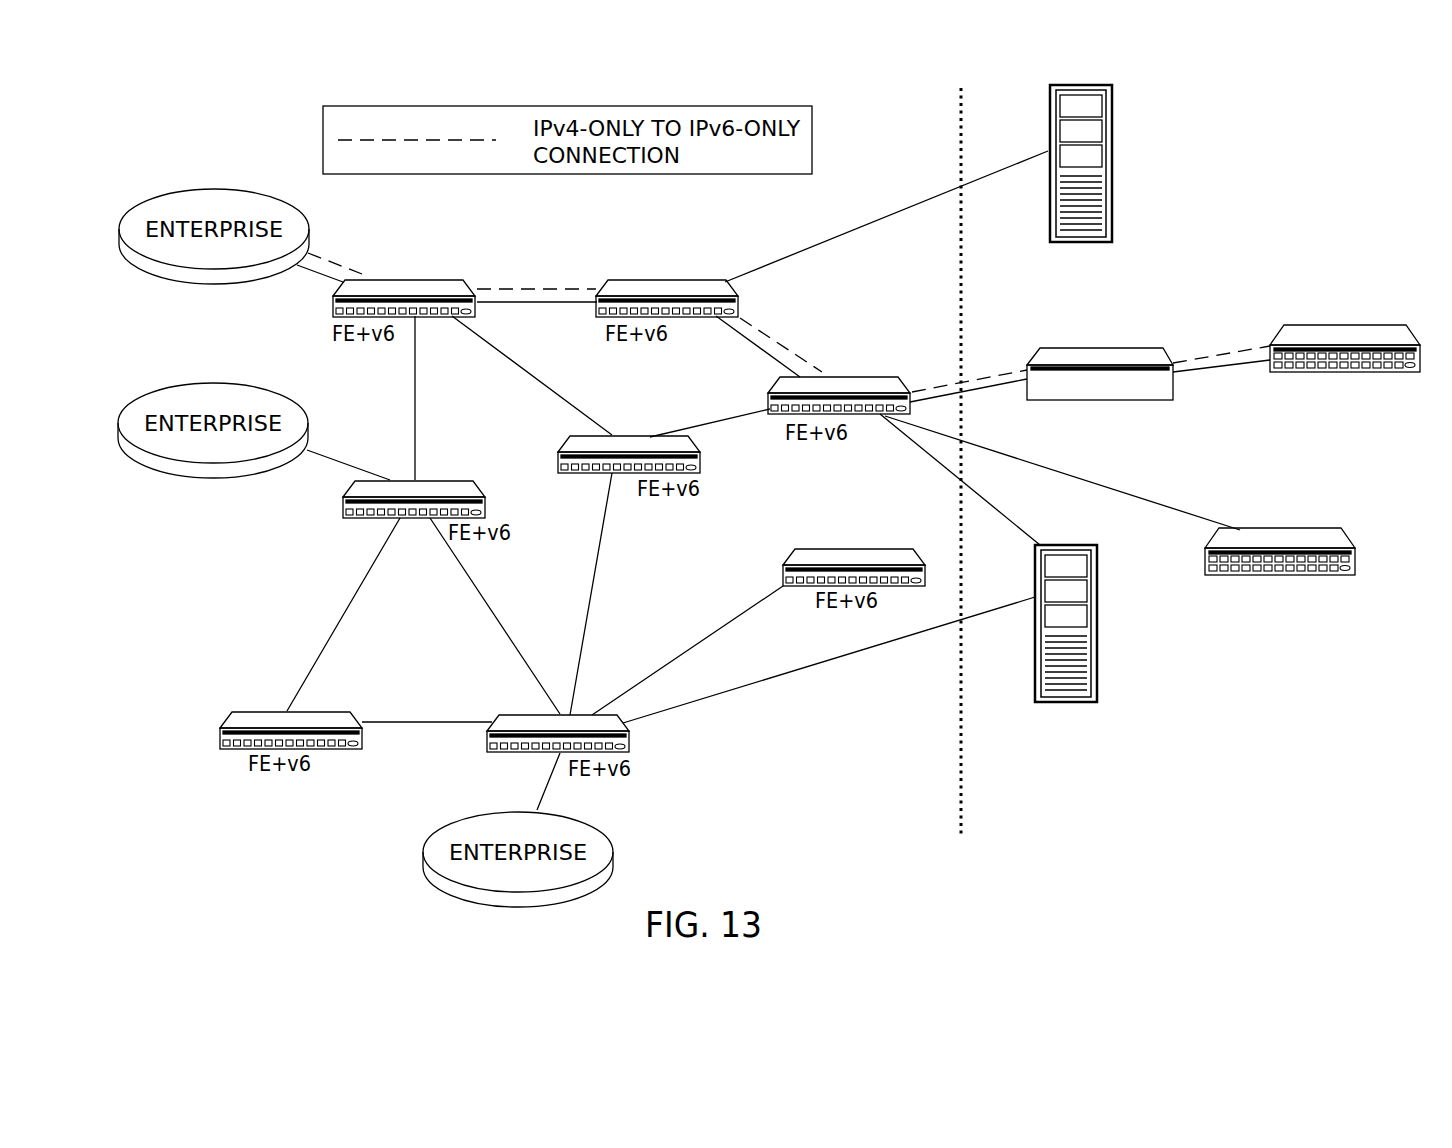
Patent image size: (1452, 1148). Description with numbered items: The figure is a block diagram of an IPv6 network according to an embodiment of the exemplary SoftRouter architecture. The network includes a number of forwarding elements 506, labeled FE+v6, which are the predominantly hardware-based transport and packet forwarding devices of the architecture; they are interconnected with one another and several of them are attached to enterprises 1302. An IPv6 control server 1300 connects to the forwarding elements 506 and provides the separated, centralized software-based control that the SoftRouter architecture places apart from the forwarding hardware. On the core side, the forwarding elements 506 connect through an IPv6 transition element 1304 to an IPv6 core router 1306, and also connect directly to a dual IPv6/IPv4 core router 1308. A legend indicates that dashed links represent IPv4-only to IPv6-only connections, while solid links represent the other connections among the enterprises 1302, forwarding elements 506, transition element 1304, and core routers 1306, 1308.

The forwarding element 506 is at (424, 280).
The IPv6 control server 1300 is at (1112, 148).
The enterprise 1302 is at (215, 189).
The IPv6 transition element 1304 is at (1108, 348).
The IPv6 core router 1306 is at (1354, 325).
The dual IPv6/IPv4 core router 1308 is at (1288, 530).